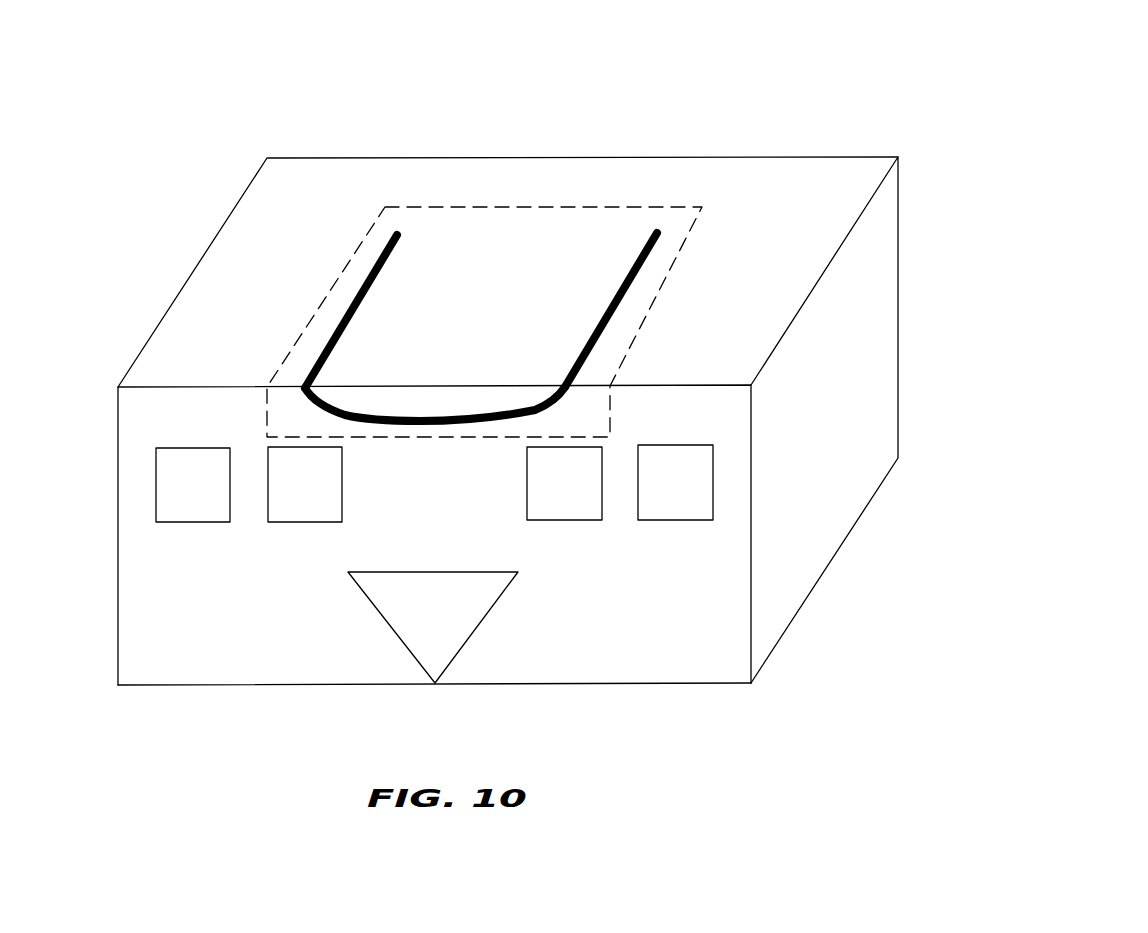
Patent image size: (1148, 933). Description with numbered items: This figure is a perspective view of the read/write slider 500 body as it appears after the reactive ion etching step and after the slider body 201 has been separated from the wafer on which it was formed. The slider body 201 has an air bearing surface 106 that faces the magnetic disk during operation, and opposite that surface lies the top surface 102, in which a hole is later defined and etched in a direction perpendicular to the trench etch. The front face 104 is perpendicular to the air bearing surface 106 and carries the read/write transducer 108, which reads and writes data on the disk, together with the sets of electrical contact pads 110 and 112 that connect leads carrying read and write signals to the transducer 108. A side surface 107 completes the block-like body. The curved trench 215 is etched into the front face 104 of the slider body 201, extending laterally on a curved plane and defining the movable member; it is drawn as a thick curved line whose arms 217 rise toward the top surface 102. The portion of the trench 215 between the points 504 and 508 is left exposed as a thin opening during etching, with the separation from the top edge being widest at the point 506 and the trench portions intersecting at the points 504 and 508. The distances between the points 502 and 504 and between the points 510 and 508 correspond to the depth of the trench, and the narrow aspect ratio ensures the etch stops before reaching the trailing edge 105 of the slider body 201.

The electronic device with antenna 500 is at (812, 94).
The top surface 102 is at (212, 330).
The front face 104 is at (145, 612).
The trailing edge 105 is at (918, 170).
The air bearing surface 106 is at (602, 685).
The side surface 107 is at (845, 424).
The read/write transducer 108 is at (500, 597).
The electrical contact pads 110 is at (200, 522).
The electrical contact pads 112 is at (565, 520).
The slider body 201 is at (751, 683).
The curved trench 215 is at (360, 420).
The antenna arms 217 is at (357, 300).
The point 502 is at (385, 236).
The point 504 is at (300, 388).
The point 506 is at (415, 425).
The point 508 is at (577, 385).
The point 510 is at (660, 233).